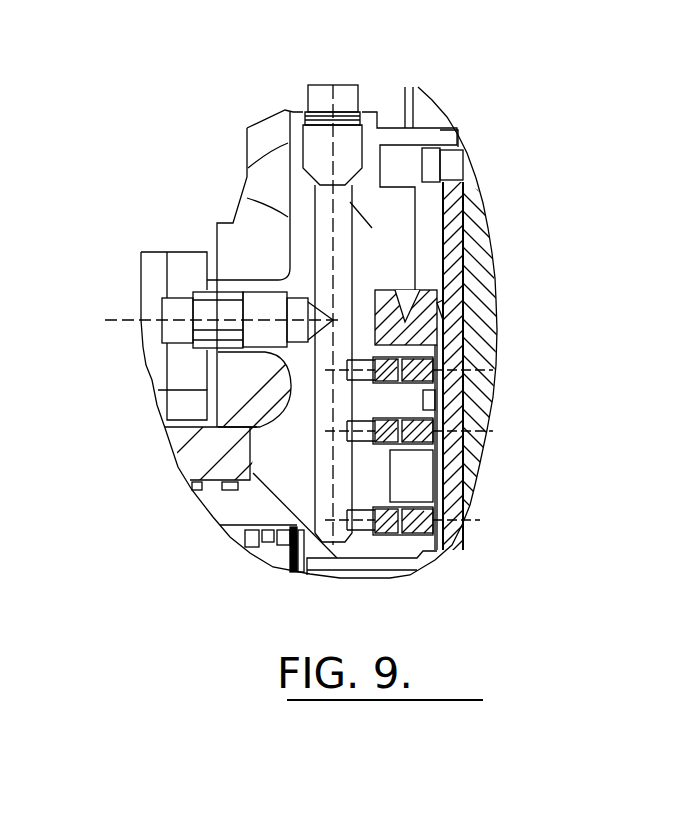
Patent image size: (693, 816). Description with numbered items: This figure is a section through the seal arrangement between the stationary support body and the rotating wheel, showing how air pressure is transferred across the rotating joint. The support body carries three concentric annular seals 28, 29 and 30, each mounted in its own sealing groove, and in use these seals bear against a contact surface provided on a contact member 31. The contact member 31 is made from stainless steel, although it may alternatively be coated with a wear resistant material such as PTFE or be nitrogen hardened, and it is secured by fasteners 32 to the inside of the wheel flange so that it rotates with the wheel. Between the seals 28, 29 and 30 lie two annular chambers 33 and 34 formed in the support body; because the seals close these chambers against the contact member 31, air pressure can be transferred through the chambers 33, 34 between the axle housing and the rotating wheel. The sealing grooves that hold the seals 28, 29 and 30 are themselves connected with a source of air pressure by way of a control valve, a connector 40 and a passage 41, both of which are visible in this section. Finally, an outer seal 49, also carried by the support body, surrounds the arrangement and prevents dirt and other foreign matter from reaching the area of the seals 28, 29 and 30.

The annular seal 28 is at (440, 375).
The annular seal 29 is at (440, 438).
The annular seal 30 is at (443, 538).
The contact member 31 is at (457, 253).
The fasteners 32 is at (450, 167).
The annular chamber 33 is at (418, 480).
The annular chamber 34 is at (440, 408).
The connector 40 is at (221, 322).
The passage 41 is at (331, 213).
The outer seal 49 is at (402, 317).